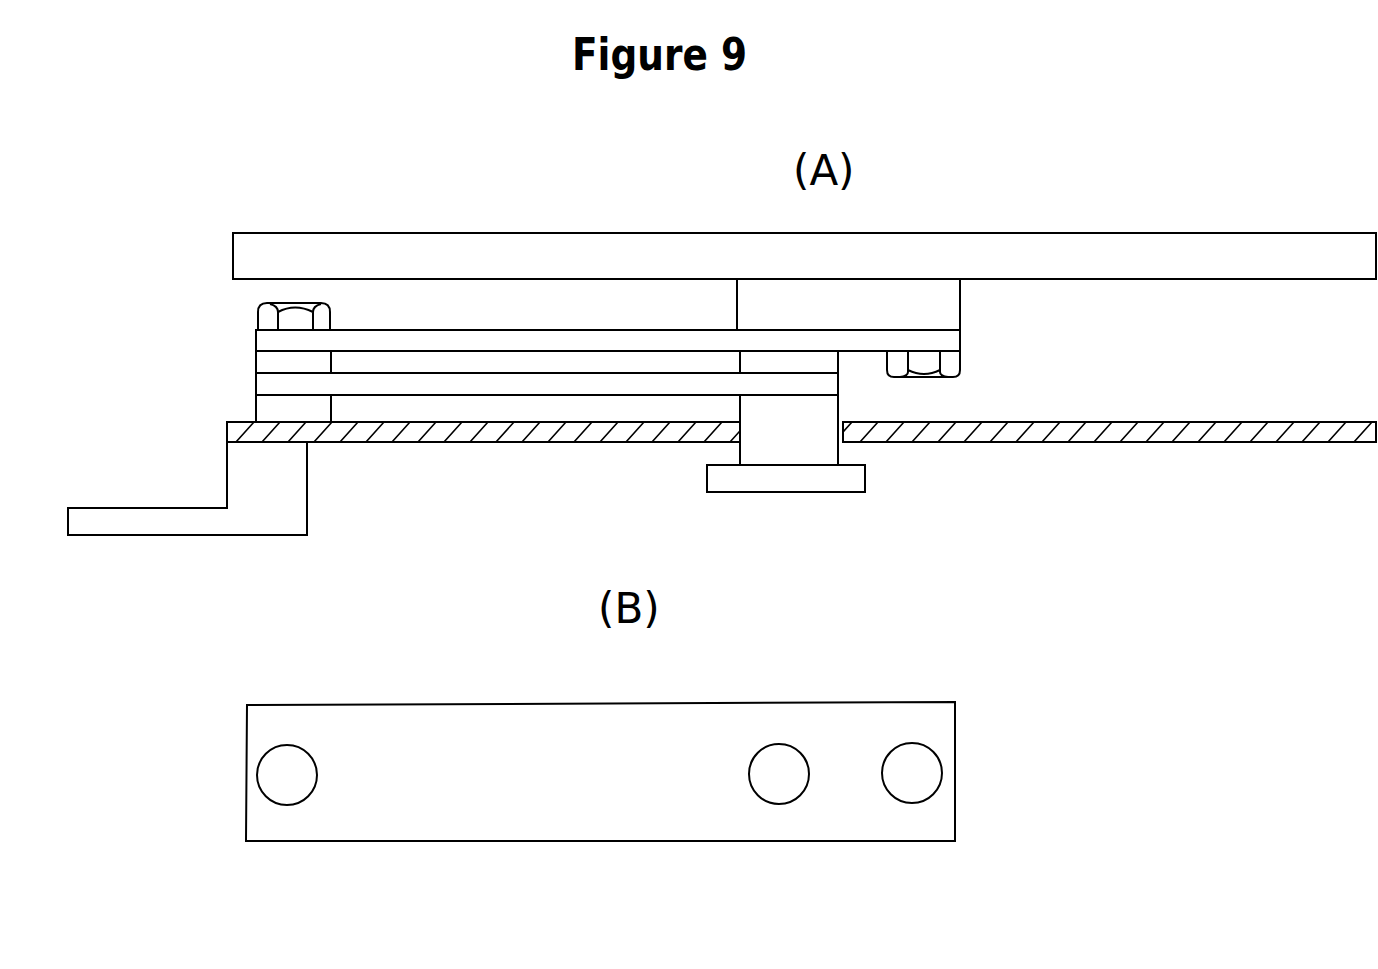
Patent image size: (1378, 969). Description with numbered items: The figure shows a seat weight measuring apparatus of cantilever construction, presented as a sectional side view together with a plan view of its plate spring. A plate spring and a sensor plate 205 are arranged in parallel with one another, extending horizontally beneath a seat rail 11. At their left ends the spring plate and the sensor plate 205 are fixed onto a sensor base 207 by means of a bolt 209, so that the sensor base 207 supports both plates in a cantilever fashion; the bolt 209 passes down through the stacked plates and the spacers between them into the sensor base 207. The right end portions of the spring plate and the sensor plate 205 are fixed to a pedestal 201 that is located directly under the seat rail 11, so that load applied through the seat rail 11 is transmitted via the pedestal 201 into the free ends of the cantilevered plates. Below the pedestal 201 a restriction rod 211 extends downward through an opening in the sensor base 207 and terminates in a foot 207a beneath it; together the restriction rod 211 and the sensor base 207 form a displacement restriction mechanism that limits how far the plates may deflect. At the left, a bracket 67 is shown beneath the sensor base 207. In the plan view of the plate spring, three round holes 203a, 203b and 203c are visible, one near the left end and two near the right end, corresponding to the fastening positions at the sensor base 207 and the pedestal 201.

The seat rail 11 is at (430, 240).
The mounting bracket 67 is at (240, 485).
The pedestal 201 is at (948, 302).
The hole 203a is at (913, 750).
The hole 203b is at (780, 750).
The hole 203c is at (272, 758).
The sensor plate 205 is at (465, 385).
The sensor base 207 is at (413, 428).
The flange of base plate 207a is at (838, 437).
The bolt 209 is at (267, 320).
The restriction rod 211 is at (803, 418).